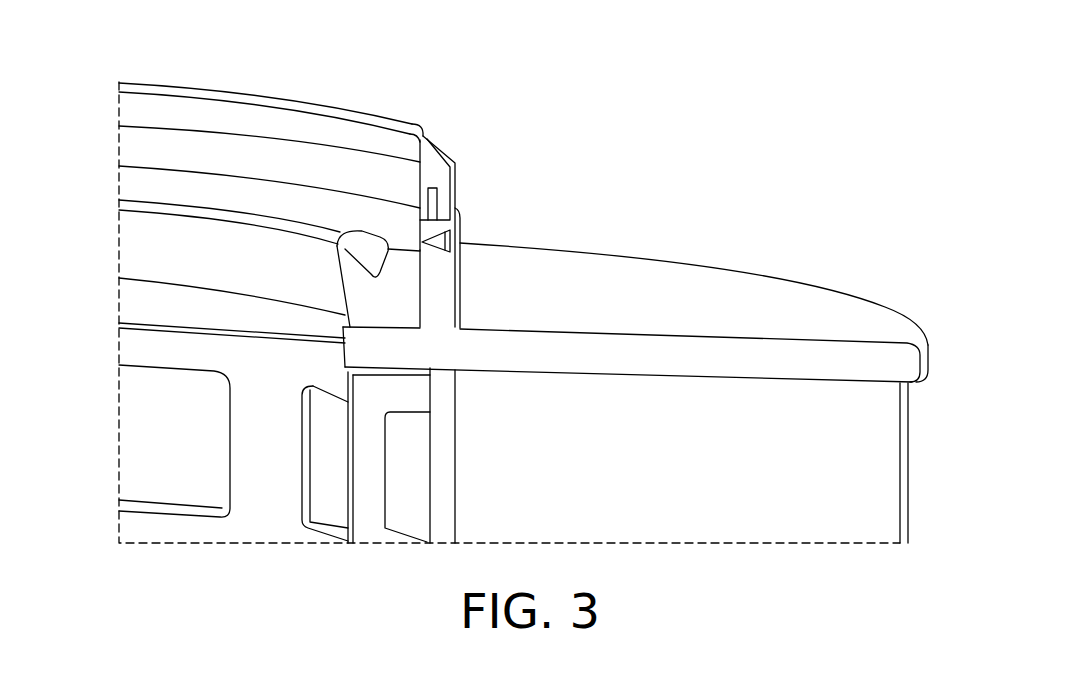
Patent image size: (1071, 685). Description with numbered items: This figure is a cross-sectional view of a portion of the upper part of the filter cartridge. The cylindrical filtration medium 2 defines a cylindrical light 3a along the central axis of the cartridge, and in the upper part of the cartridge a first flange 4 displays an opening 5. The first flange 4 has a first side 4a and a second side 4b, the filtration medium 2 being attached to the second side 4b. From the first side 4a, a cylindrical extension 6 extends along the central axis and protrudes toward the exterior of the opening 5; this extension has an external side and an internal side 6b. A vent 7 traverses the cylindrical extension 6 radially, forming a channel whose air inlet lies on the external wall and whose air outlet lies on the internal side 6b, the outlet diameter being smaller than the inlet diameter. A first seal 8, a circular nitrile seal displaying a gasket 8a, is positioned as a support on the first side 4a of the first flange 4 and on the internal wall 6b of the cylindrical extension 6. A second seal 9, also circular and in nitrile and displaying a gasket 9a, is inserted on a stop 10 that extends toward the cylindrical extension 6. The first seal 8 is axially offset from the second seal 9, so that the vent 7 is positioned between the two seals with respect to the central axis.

The filtration medium 2 is at (684, 484).
The cylindrical light 3a is at (188, 458).
The first flange 4 is at (636, 333).
The first side 4a is at (757, 295).
The second side 4b is at (595, 373).
The opening 5 is at (345, 333).
The cylindrical extension 6 is at (435, 320).
The internal side 6b is at (413, 303).
The vent 7 is at (458, 228).
The first seal 8 is at (405, 280).
The gasket 8a is at (345, 249).
The second seal 9 is at (432, 170).
The gasket 9a is at (414, 125).
The stop 10 is at (428, 187).